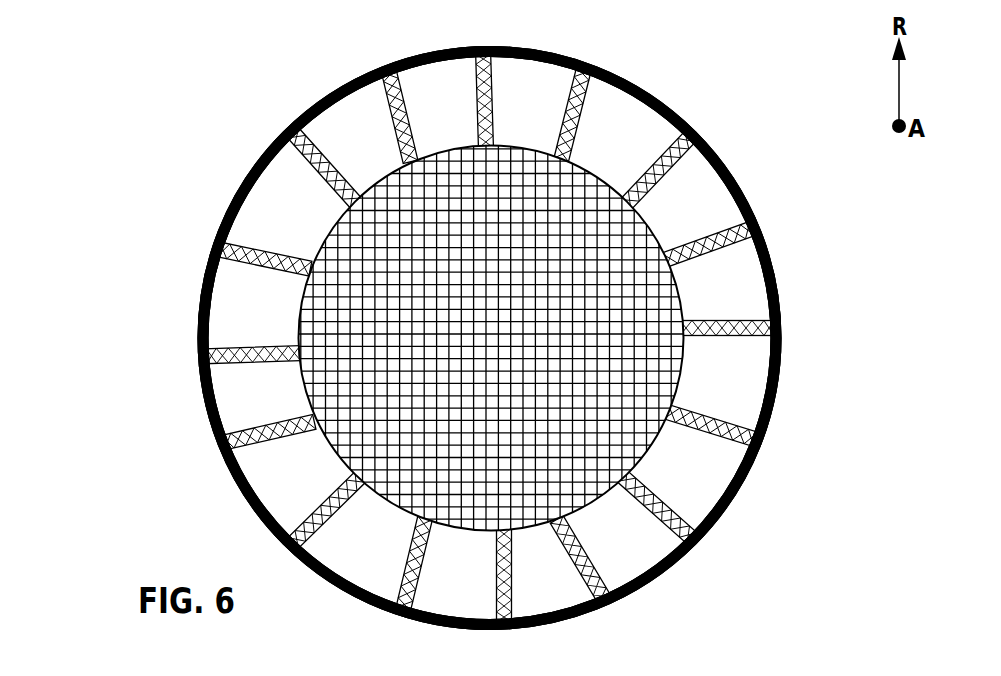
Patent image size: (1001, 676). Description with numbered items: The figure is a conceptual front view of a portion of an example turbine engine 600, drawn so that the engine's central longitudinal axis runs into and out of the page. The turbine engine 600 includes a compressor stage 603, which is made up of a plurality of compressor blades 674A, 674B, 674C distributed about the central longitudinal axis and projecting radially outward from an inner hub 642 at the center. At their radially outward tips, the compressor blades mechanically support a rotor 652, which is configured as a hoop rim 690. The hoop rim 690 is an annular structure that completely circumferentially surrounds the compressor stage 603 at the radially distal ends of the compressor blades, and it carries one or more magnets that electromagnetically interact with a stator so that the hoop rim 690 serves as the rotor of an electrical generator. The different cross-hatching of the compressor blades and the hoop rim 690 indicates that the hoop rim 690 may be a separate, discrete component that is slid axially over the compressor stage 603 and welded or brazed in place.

The turbine engine 600 is at (138, 29).
The compressor stage 603 is at (697, 72).
The inner hub 642 is at (303, 383).
The rotor 652 is at (808, 326).
The compressor blade 674A is at (237, 240).
The compressor blade 674B is at (313, 157).
The compressor blade 674C is at (400, 120).
The hoop rim 690 is at (782, 288).